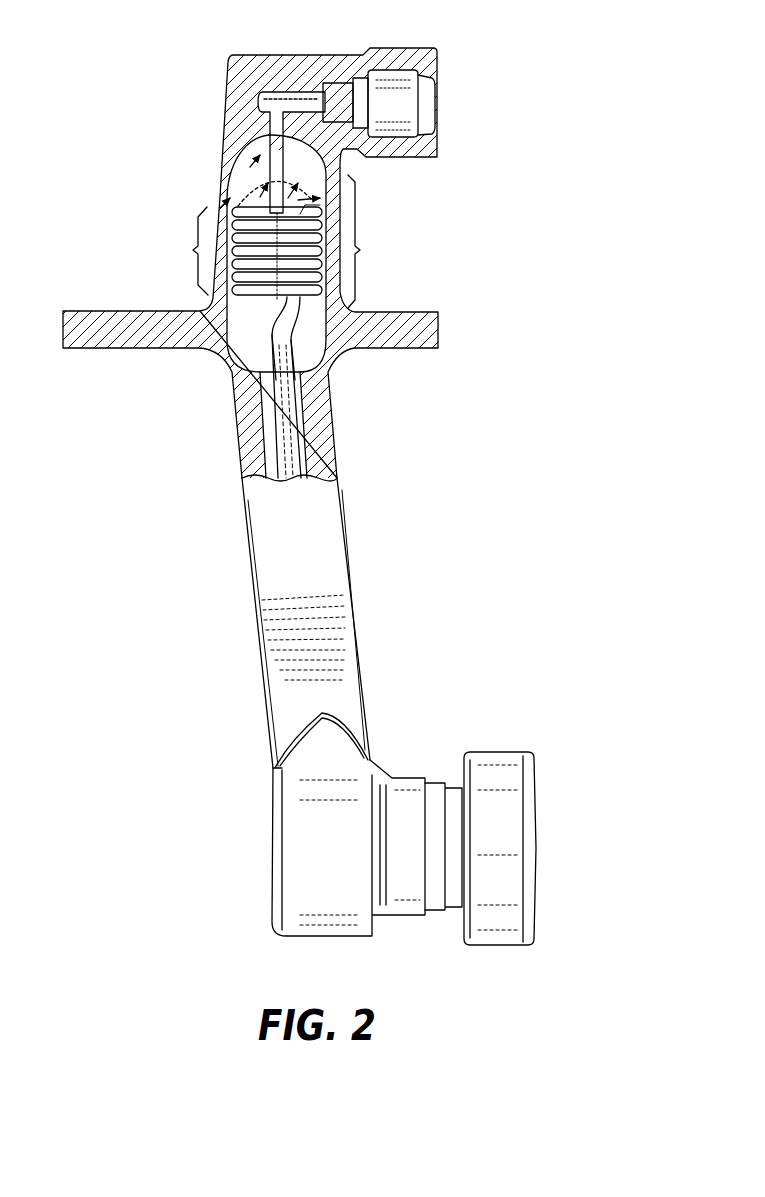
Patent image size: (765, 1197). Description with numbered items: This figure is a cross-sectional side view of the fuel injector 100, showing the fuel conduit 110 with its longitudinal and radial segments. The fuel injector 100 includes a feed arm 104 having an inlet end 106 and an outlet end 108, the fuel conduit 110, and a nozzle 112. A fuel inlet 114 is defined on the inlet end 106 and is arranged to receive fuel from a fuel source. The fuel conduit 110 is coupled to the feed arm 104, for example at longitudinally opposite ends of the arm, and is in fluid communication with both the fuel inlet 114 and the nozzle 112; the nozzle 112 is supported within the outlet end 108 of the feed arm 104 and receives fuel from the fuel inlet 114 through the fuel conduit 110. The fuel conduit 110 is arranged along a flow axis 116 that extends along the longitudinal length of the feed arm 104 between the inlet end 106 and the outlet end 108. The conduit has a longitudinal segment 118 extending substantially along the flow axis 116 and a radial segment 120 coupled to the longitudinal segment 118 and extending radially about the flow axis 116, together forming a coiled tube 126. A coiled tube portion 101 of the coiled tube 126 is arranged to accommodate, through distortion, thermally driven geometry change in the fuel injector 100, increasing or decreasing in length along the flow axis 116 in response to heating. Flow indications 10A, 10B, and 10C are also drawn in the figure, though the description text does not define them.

The fuel injector 100 is at (125, 964).
The coiled tube portion 101 is at (193, 250).
The feed arm 104 is at (250, 545).
The inlet end 106 is at (198, 170).
The outlet end 108 is at (243, 845).
The fuel conduit 110 is at (290, 440).
The nozzle 112 is at (560, 832).
The fuel inlet 114 is at (401, 103).
The flow axis 116 is at (273, 316).
The longitudinal segment 118 is at (345, 168).
The radial segment 120 is at (257, 182).
The coiled tube 126 is at (360, 250).
The flow path A 10A is at (290, 212).
The flow path B 10B is at (220, 205).
The flow path C 10C is at (320, 265).